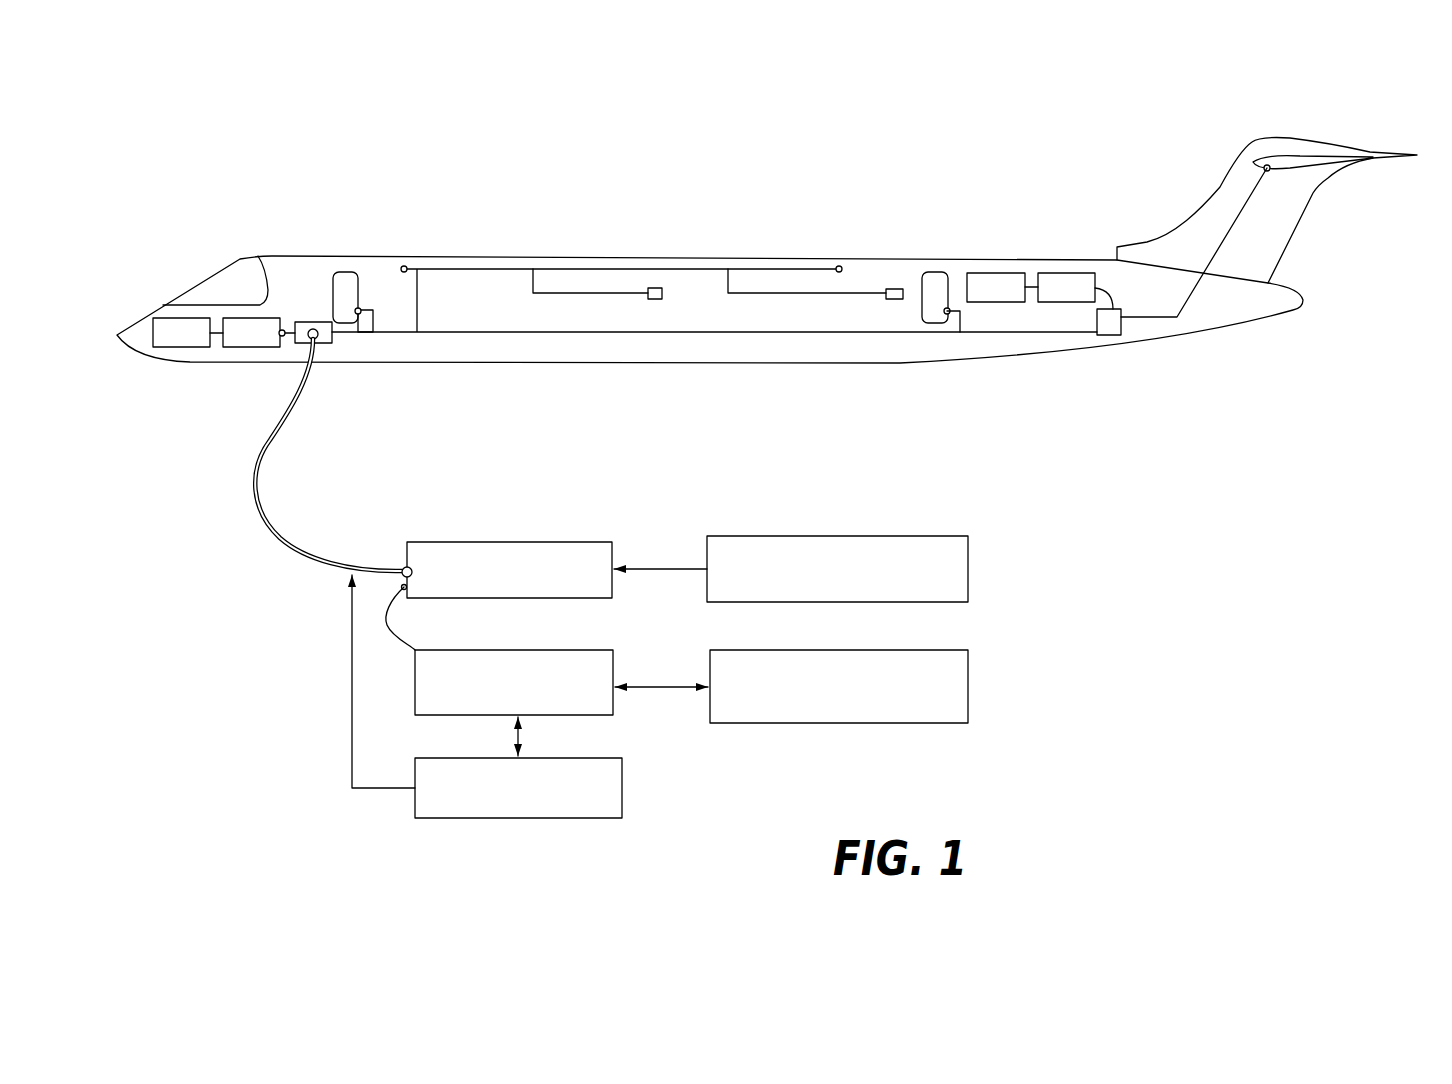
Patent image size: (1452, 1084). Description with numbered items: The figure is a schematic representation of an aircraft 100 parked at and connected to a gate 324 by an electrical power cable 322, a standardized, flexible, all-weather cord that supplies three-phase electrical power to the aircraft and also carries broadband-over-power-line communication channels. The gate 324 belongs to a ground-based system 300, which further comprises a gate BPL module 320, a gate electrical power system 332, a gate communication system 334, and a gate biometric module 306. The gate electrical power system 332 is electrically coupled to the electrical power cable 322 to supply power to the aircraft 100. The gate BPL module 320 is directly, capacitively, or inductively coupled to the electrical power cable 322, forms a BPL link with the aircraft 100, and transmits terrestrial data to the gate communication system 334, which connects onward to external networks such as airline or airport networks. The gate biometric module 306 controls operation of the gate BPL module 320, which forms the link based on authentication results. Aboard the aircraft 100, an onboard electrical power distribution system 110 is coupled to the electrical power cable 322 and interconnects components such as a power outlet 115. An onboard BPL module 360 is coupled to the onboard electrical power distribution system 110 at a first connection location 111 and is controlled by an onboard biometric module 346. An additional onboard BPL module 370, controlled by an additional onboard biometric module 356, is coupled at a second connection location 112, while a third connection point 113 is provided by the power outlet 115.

The aircraft 100 is at (767, 277).
The onboard electrical power distribution system 110 is at (767, 251).
The first connection location 111 is at (282, 333).
The second connection location 112 is at (1112, 314).
The third connection point 113 is at (358, 311).
The power outlet 115 is at (340, 335).
The onboard biometric module 346 is at (181, 332).
The onboard BPL module 360 is at (252, 332).
The additional onboard biometric module 356 is at (1002, 287).
The additional onboard BPL module 370 is at (1075, 291).
The ground-based system 300 is at (611, 620).
The electrical power cable 322 is at (308, 560).
The gate 324 is at (507, 570).
The gate electrical power system 332 is at (791, 569).
The gate BPL module 320 is at (499, 671).
The gate communication system 334 is at (791, 686).
The gate biometric module 306 is at (376, 829).